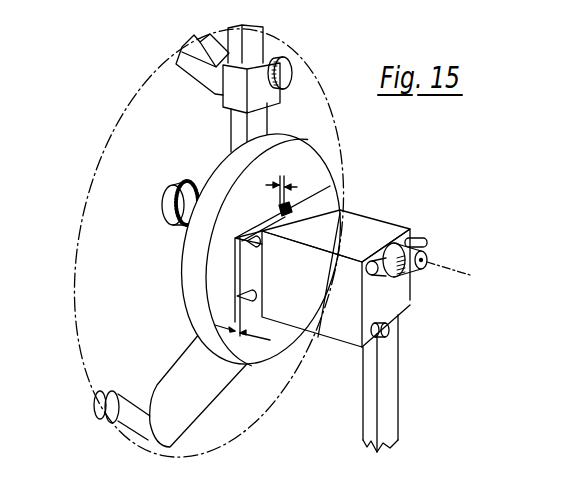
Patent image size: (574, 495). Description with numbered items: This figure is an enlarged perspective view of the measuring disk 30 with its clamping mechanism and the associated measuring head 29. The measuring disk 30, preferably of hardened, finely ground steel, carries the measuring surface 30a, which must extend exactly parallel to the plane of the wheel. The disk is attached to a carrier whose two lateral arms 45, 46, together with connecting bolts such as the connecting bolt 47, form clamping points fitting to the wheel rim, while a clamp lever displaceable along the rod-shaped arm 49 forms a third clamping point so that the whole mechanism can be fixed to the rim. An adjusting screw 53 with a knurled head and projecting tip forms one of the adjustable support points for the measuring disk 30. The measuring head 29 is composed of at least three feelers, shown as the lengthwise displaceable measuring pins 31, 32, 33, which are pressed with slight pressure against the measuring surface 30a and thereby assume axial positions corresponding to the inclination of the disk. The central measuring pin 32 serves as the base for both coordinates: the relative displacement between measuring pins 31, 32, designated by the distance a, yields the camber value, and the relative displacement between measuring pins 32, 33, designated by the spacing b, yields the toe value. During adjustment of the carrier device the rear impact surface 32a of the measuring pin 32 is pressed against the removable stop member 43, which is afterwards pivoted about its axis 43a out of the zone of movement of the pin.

The measuring head 29 is at (367, 221).
The measuring disk 30 is at (315, 158).
The measuring surface 30a is at (263, 213).
The measuring pin 31 is at (238, 297).
The measuring pin 32 is at (238, 249).
The impact surface 32a is at (384, 278).
The measuring pin 33 is at (284, 214).
The stop member 43 is at (414, 279).
The axis 43a is at (442, 262).
The lateral arm 45 is at (206, 408).
The lateral arm 46 is at (319, 338).
The connecting bolt 47 is at (132, 424).
The rod-shaped arm 49 is at (237, 125).
The adjusting screw 53 is at (172, 192).
The distance a is at (242, 341).
The spacing b is at (285, 178).